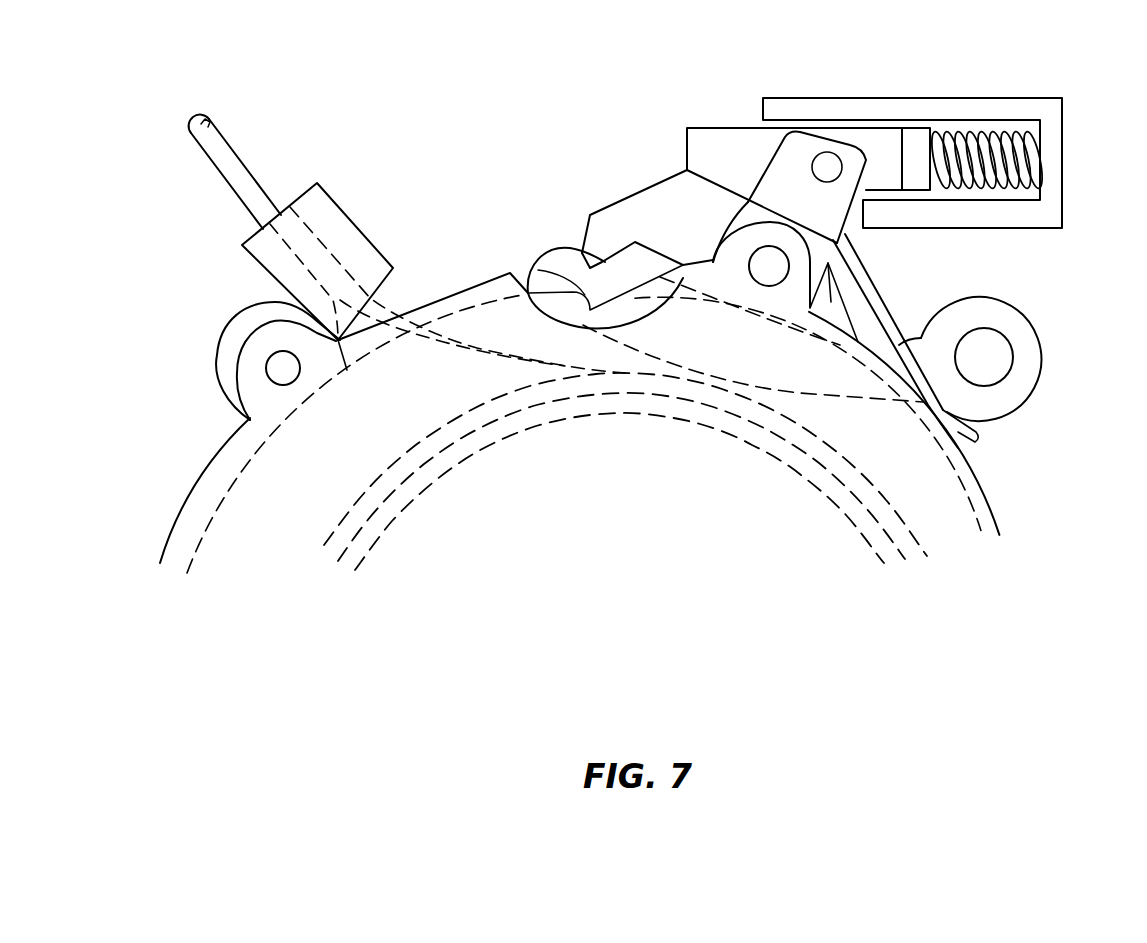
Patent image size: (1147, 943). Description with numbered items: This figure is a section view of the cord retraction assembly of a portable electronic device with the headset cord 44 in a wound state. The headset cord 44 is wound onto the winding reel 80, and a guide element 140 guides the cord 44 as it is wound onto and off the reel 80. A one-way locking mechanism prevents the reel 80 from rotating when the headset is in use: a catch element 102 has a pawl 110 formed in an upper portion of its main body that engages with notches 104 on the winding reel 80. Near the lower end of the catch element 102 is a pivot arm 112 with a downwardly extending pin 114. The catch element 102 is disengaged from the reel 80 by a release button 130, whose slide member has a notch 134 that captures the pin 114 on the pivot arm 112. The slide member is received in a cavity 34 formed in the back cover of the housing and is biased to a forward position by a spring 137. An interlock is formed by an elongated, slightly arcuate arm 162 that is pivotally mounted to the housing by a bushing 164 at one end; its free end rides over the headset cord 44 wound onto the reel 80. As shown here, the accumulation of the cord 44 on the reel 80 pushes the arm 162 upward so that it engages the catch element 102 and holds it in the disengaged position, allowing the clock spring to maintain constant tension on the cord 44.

The cavity 34 is at (1052, 157).
The headset cord 44 is at (234, 172).
The winding reel 80 is at (243, 470).
The catch element 102 is at (635, 193).
The notches 104 is at (537, 270).
The pawl 110 is at (603, 227).
The pivot arm 112 is at (832, 220).
The pin 114 is at (827, 165).
The release button 130 is at (730, 128).
The notch 134 is at (873, 137).
The spring 137 is at (1003, 137).
The guide element 140 is at (350, 218).
The arm 162 is at (742, 362).
The bushing 164 is at (1028, 314).